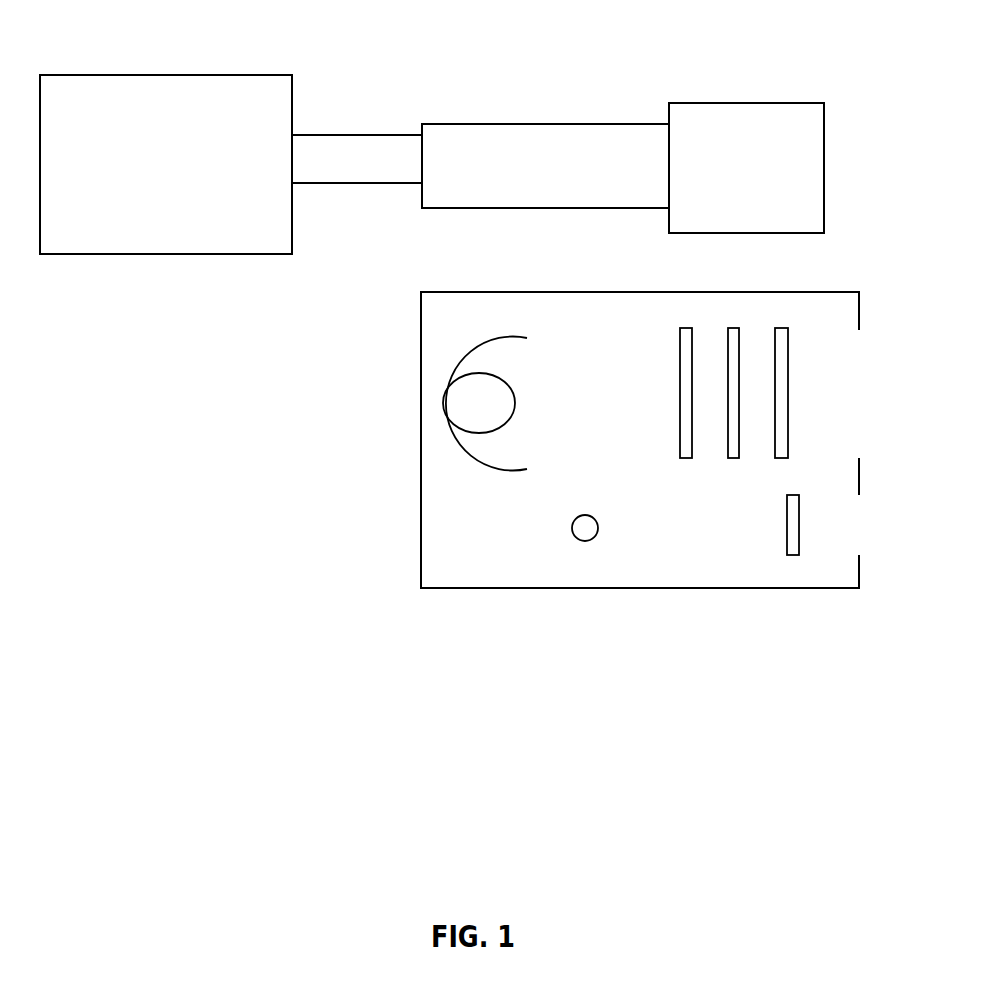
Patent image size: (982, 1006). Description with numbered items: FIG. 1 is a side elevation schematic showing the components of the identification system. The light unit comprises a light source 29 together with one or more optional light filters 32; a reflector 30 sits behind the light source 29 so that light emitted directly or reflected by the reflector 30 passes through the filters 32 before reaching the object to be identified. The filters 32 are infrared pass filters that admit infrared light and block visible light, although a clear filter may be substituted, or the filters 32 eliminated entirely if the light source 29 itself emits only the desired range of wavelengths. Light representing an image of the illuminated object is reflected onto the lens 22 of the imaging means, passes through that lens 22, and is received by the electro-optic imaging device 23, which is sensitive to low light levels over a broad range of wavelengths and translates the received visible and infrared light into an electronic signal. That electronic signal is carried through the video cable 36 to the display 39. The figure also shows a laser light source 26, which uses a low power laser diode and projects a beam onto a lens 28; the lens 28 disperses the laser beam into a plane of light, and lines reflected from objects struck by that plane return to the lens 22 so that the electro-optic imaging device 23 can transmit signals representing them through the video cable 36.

The display 39 is at (150, 74).
The video cable 36 is at (328, 134).
The electro-optic imaging device 23 is at (457, 123).
The lens 22 is at (742, 103).
The light source 29 is at (468, 408).
The reflector 30 is at (467, 445).
The light filters 32 is at (693, 340).
The lens 28 is at (799, 533).
The laser light source 26 is at (587, 542).